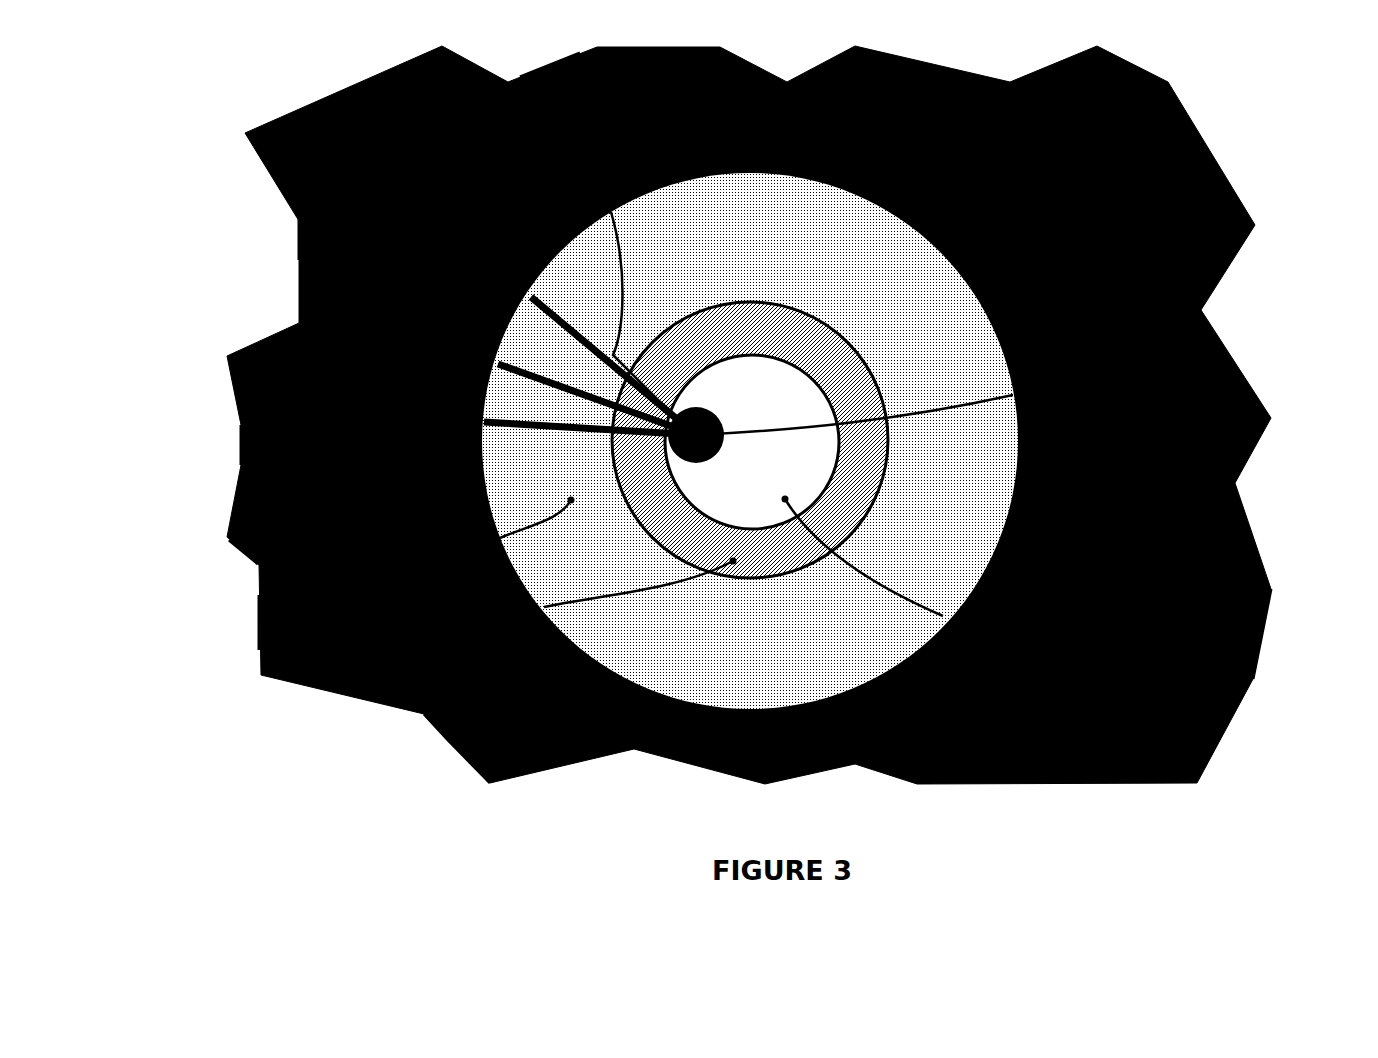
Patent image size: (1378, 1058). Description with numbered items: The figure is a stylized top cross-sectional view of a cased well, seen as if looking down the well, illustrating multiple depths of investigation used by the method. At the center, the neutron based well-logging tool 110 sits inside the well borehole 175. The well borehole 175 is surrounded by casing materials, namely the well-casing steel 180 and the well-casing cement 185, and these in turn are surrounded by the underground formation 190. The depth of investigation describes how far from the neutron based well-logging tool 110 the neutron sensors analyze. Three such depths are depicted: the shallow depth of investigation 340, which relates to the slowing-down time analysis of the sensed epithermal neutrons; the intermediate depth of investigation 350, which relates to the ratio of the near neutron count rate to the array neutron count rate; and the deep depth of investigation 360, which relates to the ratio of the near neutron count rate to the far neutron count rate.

The neutron based well-logging tool 110 is at (1213, 328).
The well borehole 175 is at (1253, 677).
The well-casing steel 180 is at (259, 621).
The well-casing cement 185 is at (251, 562).
The underground formation 190 is at (447, 739).
The shallow depth of investigation 340 is at (552, 66).
The intermediate depth of investigation 350 is at (299, 236).
The deep depth of investigation 360 is at (241, 447).